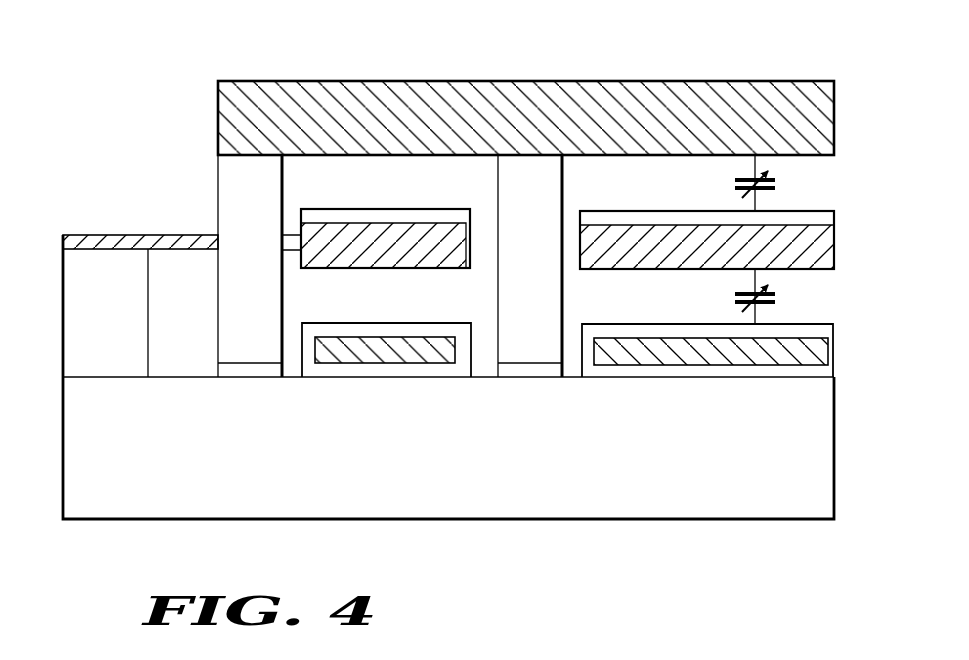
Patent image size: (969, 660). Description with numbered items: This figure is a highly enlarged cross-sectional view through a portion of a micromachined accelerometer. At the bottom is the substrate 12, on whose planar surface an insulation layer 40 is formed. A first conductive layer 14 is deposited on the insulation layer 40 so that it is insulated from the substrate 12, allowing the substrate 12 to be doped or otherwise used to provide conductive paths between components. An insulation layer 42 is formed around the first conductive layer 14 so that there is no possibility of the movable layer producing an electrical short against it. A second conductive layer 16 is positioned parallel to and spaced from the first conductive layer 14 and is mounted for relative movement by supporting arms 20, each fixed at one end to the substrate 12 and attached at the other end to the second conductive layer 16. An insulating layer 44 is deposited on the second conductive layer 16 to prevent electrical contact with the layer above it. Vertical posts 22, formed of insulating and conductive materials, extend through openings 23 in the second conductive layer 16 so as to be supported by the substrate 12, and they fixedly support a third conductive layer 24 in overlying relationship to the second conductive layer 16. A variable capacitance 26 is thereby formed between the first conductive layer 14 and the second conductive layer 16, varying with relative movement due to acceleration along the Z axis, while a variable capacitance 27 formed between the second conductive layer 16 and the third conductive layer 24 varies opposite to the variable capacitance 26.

The substrate 12 is at (100, 520).
The first conductive layer 14 is at (350, 347).
The second conductive layer 16 is at (833, 250).
The supporting arms 20 is at (100, 235).
The vertical posts 22 is at (498, 178).
The openings 23 is at (572, 256).
The third conductive layer 24 is at (218, 102).
The variable capacitance 26 is at (757, 322).
The variable capacitance 27 is at (757, 208).
The insulation layer 40 is at (524, 378).
The insulation layer 42 is at (378, 322).
The insulating layer 44 is at (832, 221).